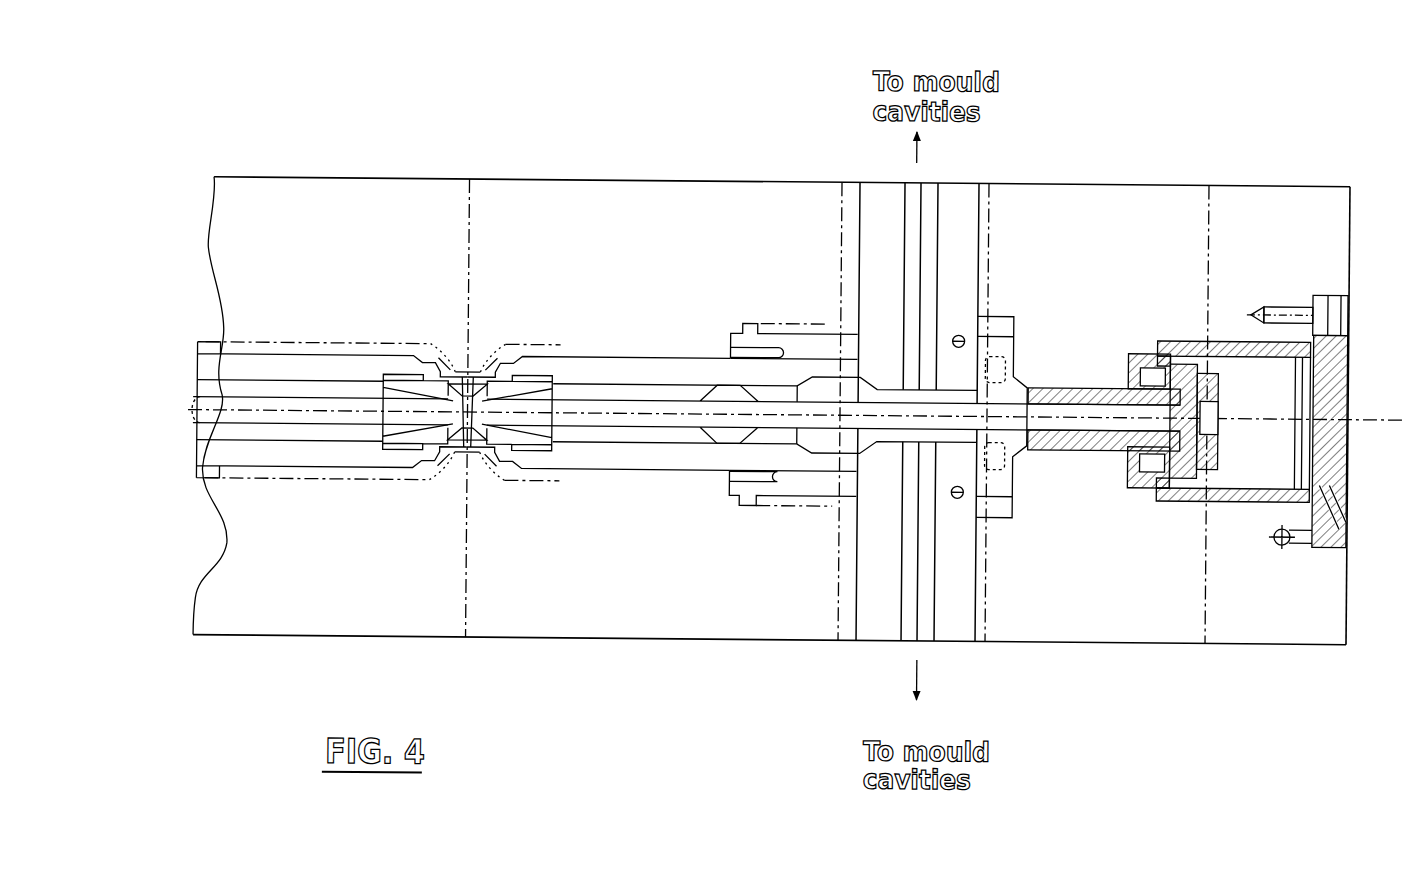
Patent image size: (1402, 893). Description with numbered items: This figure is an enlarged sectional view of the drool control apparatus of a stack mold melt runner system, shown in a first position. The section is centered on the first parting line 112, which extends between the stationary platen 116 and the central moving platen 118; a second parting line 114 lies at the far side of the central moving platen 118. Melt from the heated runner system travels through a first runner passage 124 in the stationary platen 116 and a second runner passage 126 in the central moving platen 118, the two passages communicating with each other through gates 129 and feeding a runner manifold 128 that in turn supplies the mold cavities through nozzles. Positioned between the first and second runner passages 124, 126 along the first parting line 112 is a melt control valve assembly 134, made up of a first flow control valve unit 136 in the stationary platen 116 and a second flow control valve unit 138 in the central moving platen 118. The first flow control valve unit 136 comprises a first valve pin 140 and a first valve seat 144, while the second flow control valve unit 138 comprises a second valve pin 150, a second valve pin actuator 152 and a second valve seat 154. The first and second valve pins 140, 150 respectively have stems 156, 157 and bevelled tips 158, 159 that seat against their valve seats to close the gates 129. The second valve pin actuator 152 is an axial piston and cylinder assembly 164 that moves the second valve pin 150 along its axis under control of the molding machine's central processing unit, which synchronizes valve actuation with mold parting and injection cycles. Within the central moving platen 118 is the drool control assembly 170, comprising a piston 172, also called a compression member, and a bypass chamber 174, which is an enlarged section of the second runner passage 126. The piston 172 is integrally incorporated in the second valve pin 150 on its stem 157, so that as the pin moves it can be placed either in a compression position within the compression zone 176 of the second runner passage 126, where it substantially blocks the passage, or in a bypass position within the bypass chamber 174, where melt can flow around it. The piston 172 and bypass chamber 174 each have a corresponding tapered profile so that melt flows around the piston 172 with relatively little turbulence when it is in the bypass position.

The first parting line 112 is at (468, 179).
The second parting line 114 is at (1285, 179).
The stationary platen 116 is at (260, 180).
The central moving platen 118 is at (583, 179).
The first runner passage 124 is at (213, 345).
The second runner passage 126 is at (607, 353).
The runner manifold 128 is at (935, 199).
The gates 129 is at (467, 478).
The melt control valve assembly 134 is at (443, 508).
The first flow control valve unit 136 is at (404, 324).
The second flow control valve unit 138 is at (523, 290).
The first valve pin 140 is at (260, 472).
The first valve seat 144 is at (455, 458).
The second valve pin 150 is at (612, 428).
The second valve pin actuator 152 is at (1098, 374).
The second valve seat 154 is at (483, 470).
The stem of first valve pin 156 is at (300, 394).
The stem of second valve pin 157 is at (660, 398).
The bevelled tip of first valve pin 158 is at (464, 376).
The bevelled tip of second valve pin 159 is at (474, 376).
The axial piston and cylinder assembly 164 is at (1105, 448).
The drool control assembly 170 is at (769, 346).
The piston 172 is at (721, 433).
The bypass chamber 174 is at (822, 497).
The compression zone 176 is at (775, 443).